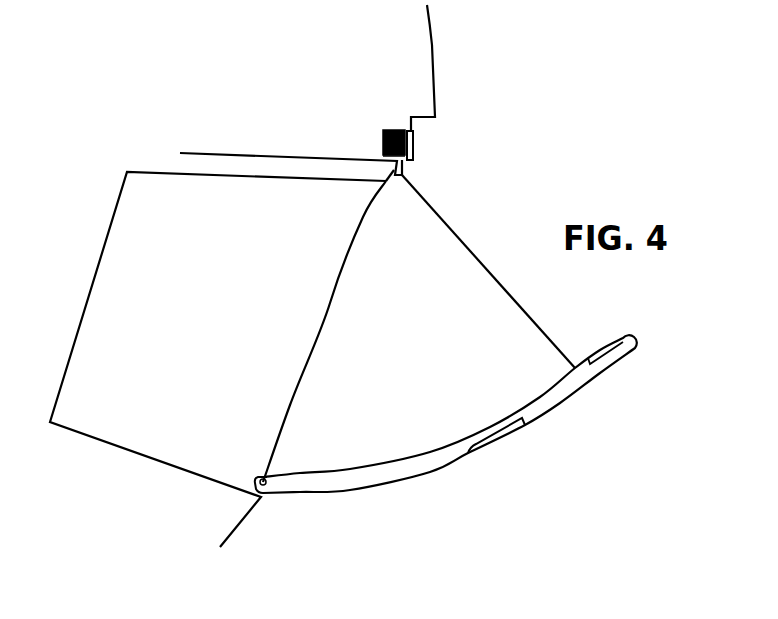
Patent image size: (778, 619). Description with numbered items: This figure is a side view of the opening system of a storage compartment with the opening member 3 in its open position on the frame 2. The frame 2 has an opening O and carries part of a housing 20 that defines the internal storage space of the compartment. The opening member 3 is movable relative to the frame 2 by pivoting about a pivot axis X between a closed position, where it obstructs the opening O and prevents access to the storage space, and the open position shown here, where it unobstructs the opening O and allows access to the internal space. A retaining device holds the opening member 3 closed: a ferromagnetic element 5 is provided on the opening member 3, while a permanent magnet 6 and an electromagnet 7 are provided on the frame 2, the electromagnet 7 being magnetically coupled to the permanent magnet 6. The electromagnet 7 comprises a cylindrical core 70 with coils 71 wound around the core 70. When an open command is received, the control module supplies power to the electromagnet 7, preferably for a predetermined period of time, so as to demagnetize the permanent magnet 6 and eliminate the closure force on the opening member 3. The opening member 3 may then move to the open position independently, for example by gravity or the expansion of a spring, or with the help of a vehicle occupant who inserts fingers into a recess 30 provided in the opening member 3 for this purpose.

The frame 2 is at (434, 36).
The electromagnet 7 is at (390, 112).
The cylindrical core 70 is at (384, 137).
The coils 71 is at (384, 153).
The permanent magnet 6 is at (414, 143).
The housing 20 is at (148, 462).
The opening member 3 is at (438, 470).
The recess 30 is at (516, 431).
The ferromagnetic element 5 is at (603, 346).
The opening O is at (372, 258).
The pivot axis X is at (265, 488).